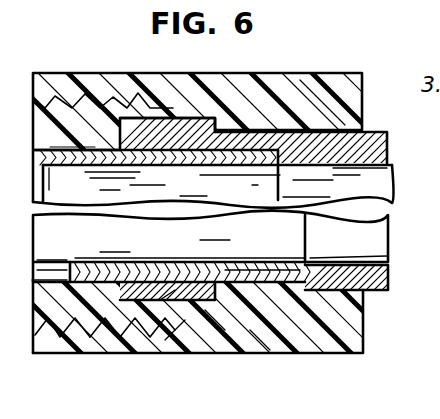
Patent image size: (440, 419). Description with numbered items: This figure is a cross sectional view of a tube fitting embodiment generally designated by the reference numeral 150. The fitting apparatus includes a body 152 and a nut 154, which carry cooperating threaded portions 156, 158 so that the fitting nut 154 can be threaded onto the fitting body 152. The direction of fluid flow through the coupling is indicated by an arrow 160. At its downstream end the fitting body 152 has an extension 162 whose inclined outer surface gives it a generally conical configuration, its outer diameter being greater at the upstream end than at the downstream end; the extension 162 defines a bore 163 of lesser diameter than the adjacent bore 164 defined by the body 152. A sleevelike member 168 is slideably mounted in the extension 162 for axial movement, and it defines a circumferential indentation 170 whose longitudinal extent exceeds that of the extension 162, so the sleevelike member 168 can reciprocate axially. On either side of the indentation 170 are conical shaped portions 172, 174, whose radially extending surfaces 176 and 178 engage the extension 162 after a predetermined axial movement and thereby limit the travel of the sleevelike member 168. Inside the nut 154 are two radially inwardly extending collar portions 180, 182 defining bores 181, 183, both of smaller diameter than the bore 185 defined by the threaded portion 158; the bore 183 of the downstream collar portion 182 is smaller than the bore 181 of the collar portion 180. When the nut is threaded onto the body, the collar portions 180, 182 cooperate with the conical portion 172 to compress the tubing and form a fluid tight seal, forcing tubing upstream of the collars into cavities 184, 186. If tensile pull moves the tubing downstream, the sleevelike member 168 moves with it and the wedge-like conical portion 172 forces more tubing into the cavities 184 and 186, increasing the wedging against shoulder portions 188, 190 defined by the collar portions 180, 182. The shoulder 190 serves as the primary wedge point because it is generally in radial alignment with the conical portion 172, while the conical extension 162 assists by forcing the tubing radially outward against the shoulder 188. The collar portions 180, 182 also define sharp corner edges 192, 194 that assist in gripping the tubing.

The fitting apparatus 150 is at (322, 60).
The fitting body 152 is at (54, 310).
The fitting nut 154 is at (320, 360).
The threaded portion 156 is at (53, 100).
The threaded portion 158 is at (106, 110).
The arrow 160 is at (362, 194).
The extension 162 is at (143, 152).
The bore 163 is at (192, 253).
The bore 164 is at (55, 260).
The sleevelike member 168 is at (220, 130).
The indentation 170 is at (81, 150).
The conical shaped portion 172 is at (239, 184).
The conical shaped portion 174 is at (66, 183).
The radially extending surface 176 is at (215, 300).
The radially extending surface 178 is at (110, 300).
The collar portion 180 is at (188, 117).
The bore 181 is at (194, 183).
The collar portion 182 is at (280, 123).
The bore 183 is at (306, 180).
The cavity 184 is at (175, 320).
The bore 185 is at (138, 115).
The cavity 186 is at (255, 320).
The shoulder portion 188 is at (167, 280).
The shoulder portion 190 is at (238, 305).
The sharp corner edge 192 is at (172, 290).
The sharp corner edge 194 is at (373, 243).